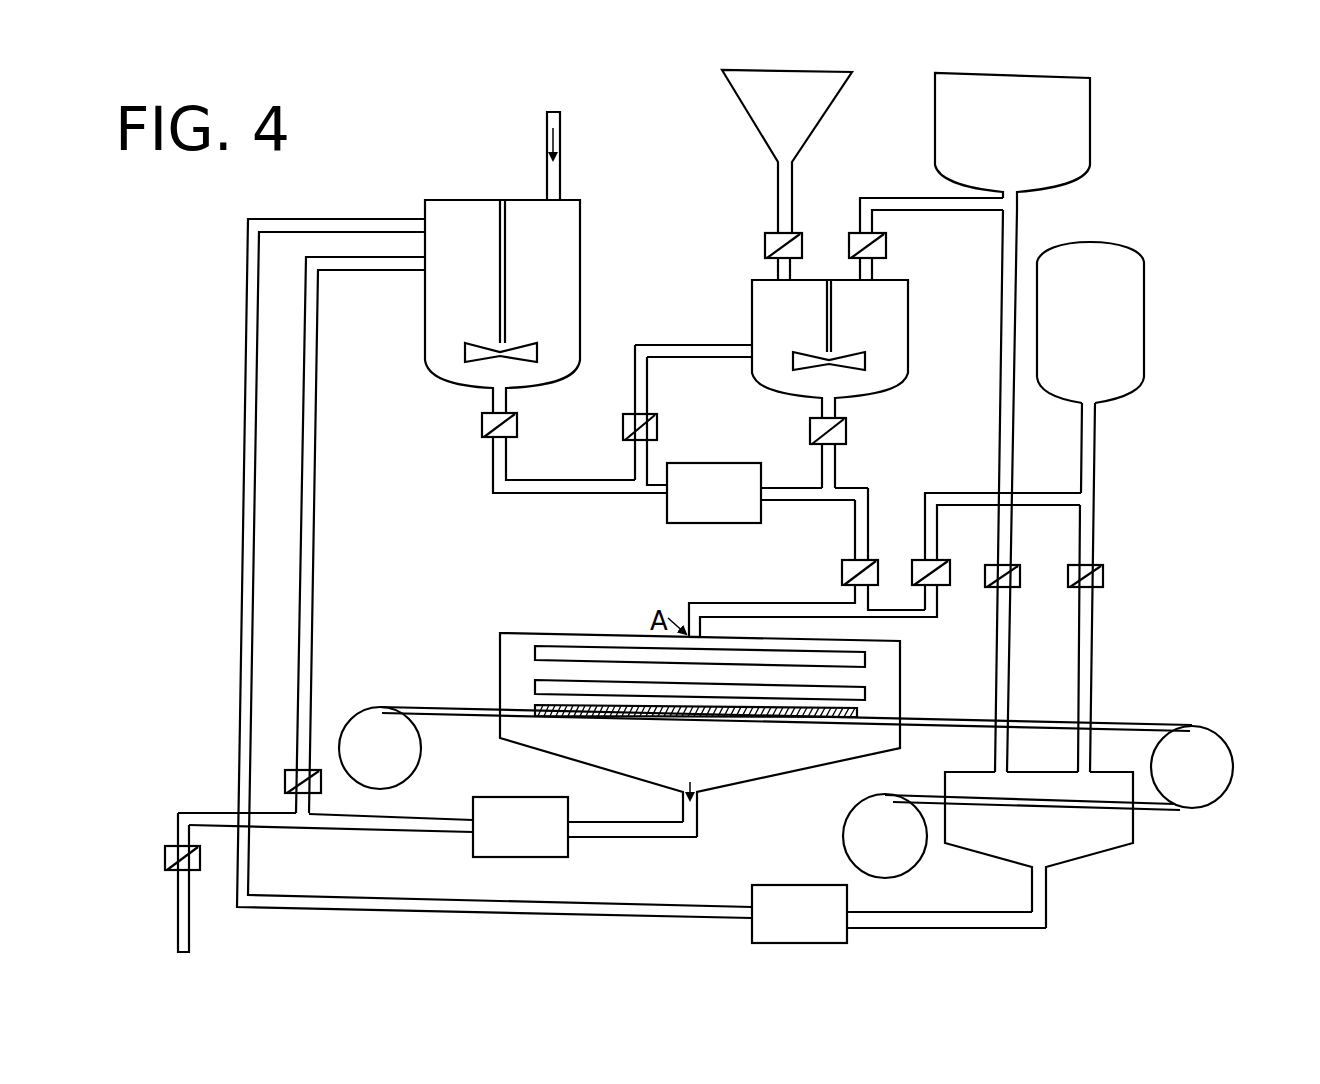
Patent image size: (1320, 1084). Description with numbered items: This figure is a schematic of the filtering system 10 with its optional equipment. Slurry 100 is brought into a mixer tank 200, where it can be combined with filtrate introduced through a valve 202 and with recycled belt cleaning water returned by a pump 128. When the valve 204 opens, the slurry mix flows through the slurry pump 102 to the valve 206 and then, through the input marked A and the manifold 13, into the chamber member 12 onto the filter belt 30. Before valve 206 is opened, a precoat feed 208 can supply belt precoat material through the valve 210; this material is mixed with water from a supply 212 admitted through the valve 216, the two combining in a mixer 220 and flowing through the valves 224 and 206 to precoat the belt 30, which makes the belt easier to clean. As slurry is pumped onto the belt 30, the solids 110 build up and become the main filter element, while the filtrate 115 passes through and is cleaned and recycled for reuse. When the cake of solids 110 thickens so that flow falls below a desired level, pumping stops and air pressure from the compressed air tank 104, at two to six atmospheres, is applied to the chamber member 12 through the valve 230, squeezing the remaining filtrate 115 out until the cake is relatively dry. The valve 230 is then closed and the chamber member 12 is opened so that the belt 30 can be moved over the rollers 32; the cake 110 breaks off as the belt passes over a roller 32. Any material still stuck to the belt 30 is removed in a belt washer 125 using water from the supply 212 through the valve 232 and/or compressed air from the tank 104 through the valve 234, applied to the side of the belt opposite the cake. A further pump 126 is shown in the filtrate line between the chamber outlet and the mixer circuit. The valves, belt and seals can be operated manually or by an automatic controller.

The system 10 is at (666, 691).
The chamber member 12 is at (500, 653).
The manifold 13 is at (700, 640).
The filter belt 30 is at (413, 704).
The rollers 32 is at (412, 757).
The slurry 100 is at (553, 124).
The slurry pump 102 is at (714, 493).
The compressed air tank 104 is at (1099, 507).
The solids 110 is at (535, 706).
The filtrate 115 is at (706, 771).
The belt washer 125 is at (1039, 850).
The filtrate pump 126 is at (585, 827).
The pump 128 is at (899, 914).
The mixer tank 200 is at (502, 306).
The valve 202 is at (312, 793).
The valve 204 is at (482, 425).
The valve 206 is at (842, 566).
The precoat feed 208 is at (787, 151).
The valve 210 is at (765, 245).
The water supply 212 is at (1012, 422).
The valve 216 is at (886, 248).
The mixer 220 is at (830, 349).
The valve 224 is at (846, 432).
The valve 230 is at (917, 570).
The valve 232 is at (1008, 588).
The valve 234 is at (1103, 576).